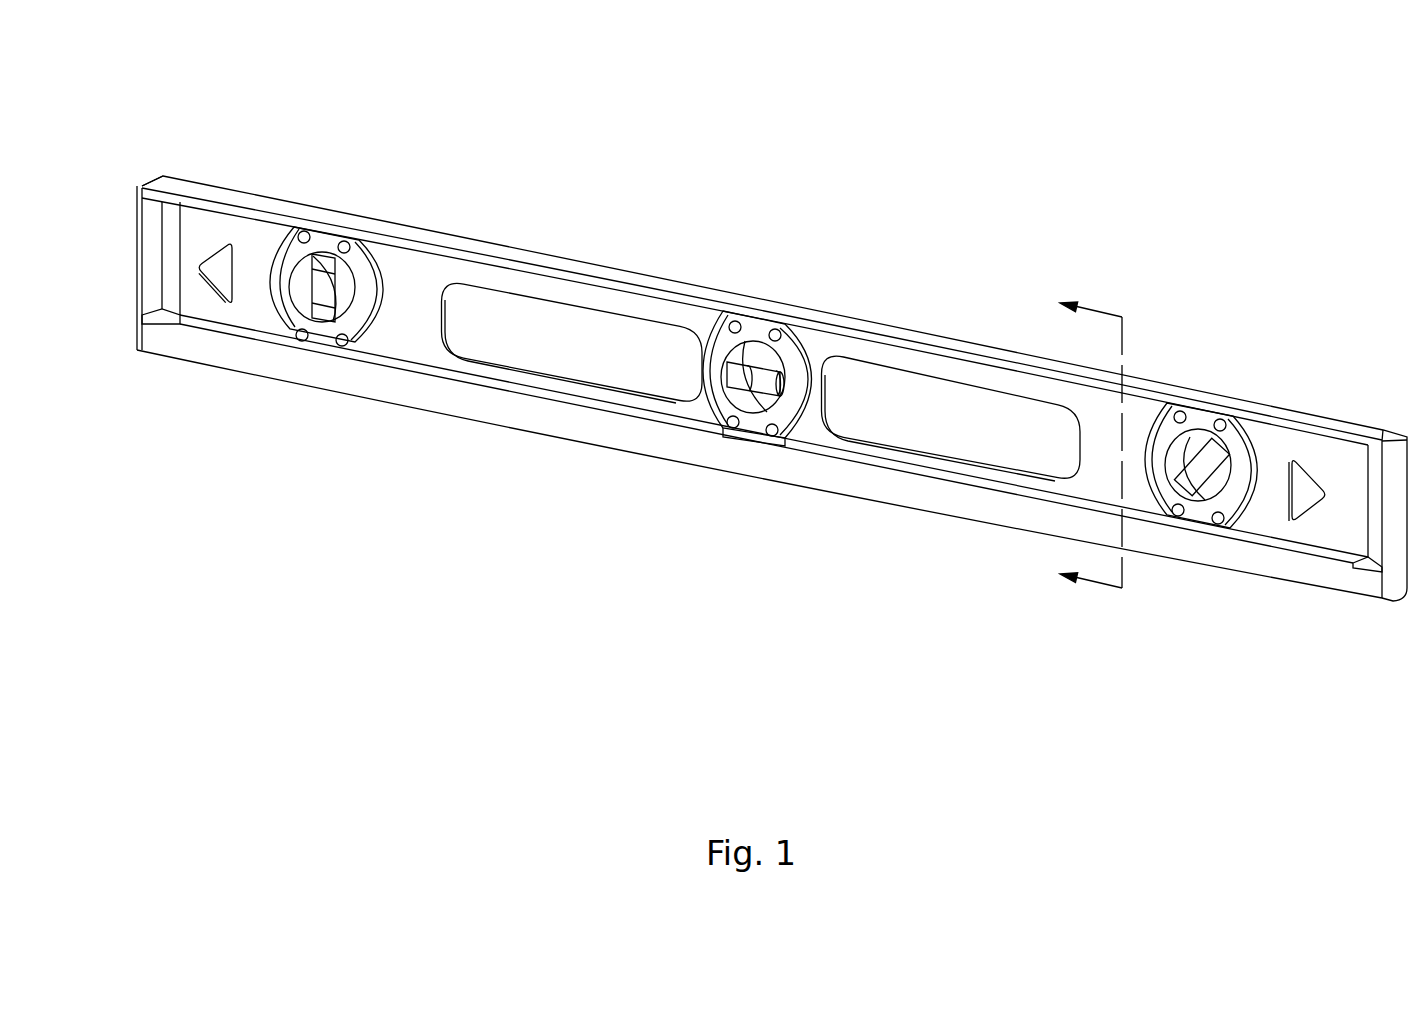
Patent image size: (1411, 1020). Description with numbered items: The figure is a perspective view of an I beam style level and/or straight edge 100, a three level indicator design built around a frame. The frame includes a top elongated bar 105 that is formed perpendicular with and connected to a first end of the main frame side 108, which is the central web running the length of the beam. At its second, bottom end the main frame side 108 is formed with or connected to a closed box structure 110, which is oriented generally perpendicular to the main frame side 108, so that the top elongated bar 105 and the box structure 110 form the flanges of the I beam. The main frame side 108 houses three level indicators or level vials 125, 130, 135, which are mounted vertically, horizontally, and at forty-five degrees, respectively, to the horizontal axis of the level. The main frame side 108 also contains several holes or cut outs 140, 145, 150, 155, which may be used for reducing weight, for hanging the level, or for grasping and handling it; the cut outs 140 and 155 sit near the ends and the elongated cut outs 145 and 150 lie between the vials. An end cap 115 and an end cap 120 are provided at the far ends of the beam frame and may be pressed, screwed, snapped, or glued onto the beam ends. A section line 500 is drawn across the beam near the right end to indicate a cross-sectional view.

The I beam style level and/or straight edge 100 is at (972, 180).
The top elongated bar 105 is at (580, 267).
The main frame side 108 is at (413, 277).
The box structure 110 is at (377, 388).
The end cap 115 is at (137, 278).
The end cap 120 is at (1388, 604).
The level indicator or level vial 125 is at (285, 318).
The level indicator or level vial 130 is at (705, 413).
The level indicator or level vial 135 is at (1197, 417).
The hole or cut out 140 is at (207, 245).
The hole or cut out 145 is at (552, 376).
The hole or cut out 150 is at (913, 450).
The hole or cut out 155 is at (1290, 521).
The section line 500 is at (1068, 439).